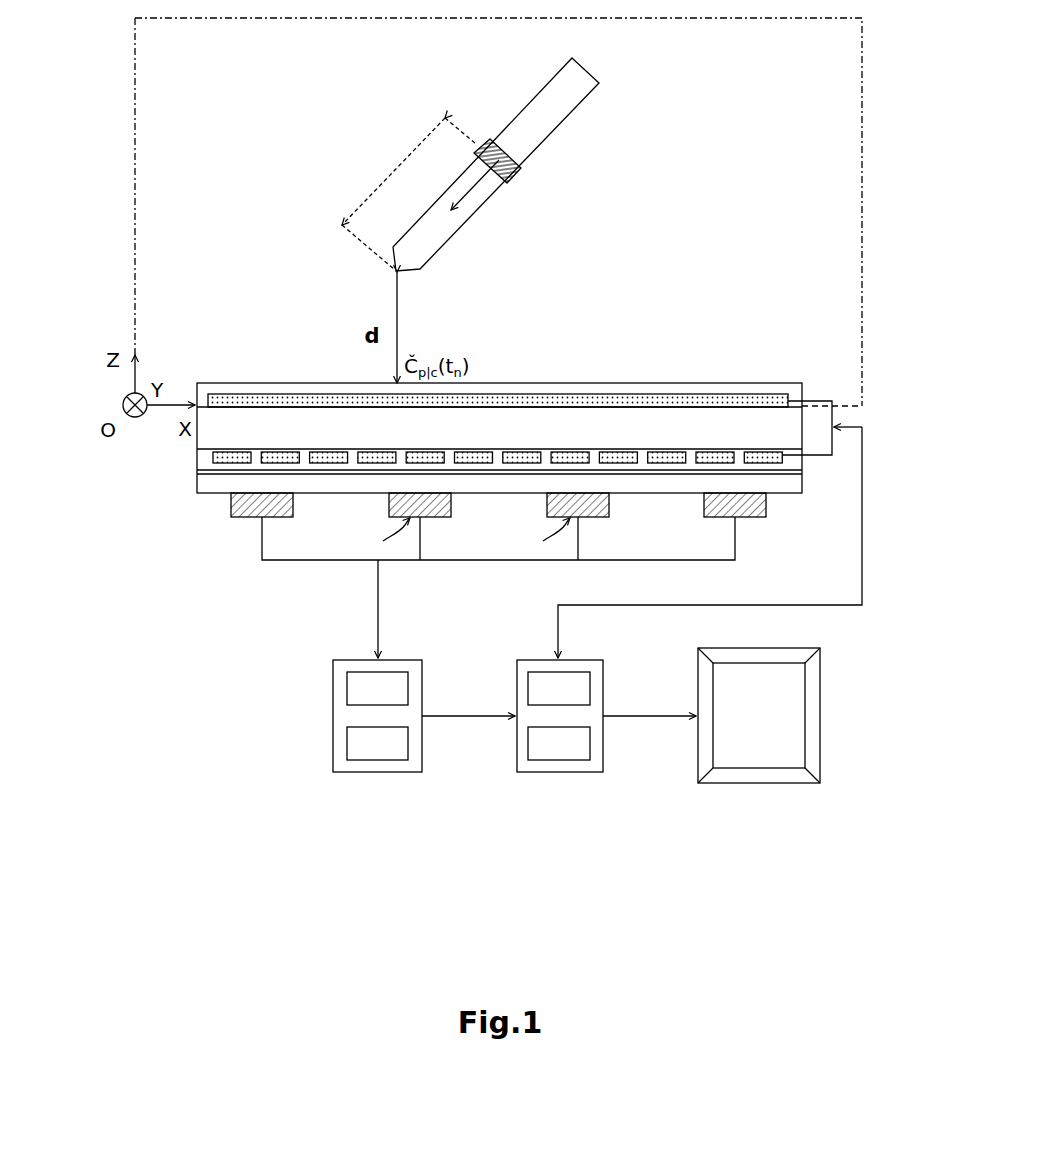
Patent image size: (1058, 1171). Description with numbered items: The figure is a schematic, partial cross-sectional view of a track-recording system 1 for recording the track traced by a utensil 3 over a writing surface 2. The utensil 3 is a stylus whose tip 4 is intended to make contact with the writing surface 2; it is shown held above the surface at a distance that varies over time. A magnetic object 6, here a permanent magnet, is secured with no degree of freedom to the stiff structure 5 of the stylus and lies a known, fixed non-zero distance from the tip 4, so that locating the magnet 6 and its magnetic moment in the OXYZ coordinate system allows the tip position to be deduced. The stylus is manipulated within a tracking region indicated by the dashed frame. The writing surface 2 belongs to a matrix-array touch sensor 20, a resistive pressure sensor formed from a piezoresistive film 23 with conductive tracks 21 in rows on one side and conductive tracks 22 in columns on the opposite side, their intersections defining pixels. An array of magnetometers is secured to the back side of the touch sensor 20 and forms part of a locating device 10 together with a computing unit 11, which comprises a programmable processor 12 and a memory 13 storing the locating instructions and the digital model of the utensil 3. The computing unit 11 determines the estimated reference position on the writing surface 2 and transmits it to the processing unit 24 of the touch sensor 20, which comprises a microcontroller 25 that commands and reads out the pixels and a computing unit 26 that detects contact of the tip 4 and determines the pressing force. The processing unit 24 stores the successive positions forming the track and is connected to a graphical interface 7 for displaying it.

The track-recording system 1 is at (103, 228).
The writing surface 2 is at (738, 383).
The utensil 3 is at (540, 191).
The tip 4 is at (405, 277).
The stiff structure 5 is at (577, 110).
The magnetic object 6 is at (488, 135).
The graphical interface 7 is at (822, 714).
The locating device 10 is at (416, 435).
The computing unit 11 is at (338, 756).
The programmable processor 12 is at (342, 688).
The memory 13 is at (342, 745).
The matrix-array touch sensor 20 is at (416, 404).
The conductive tracks 21 is at (230, 390).
The conductive tracks 22 is at (210, 455).
The film 23 is at (253, 428).
The processing unit 24 is at (529, 756).
The microcontroller 25 is at (526, 688).
The computing unit 26 is at (526, 743).